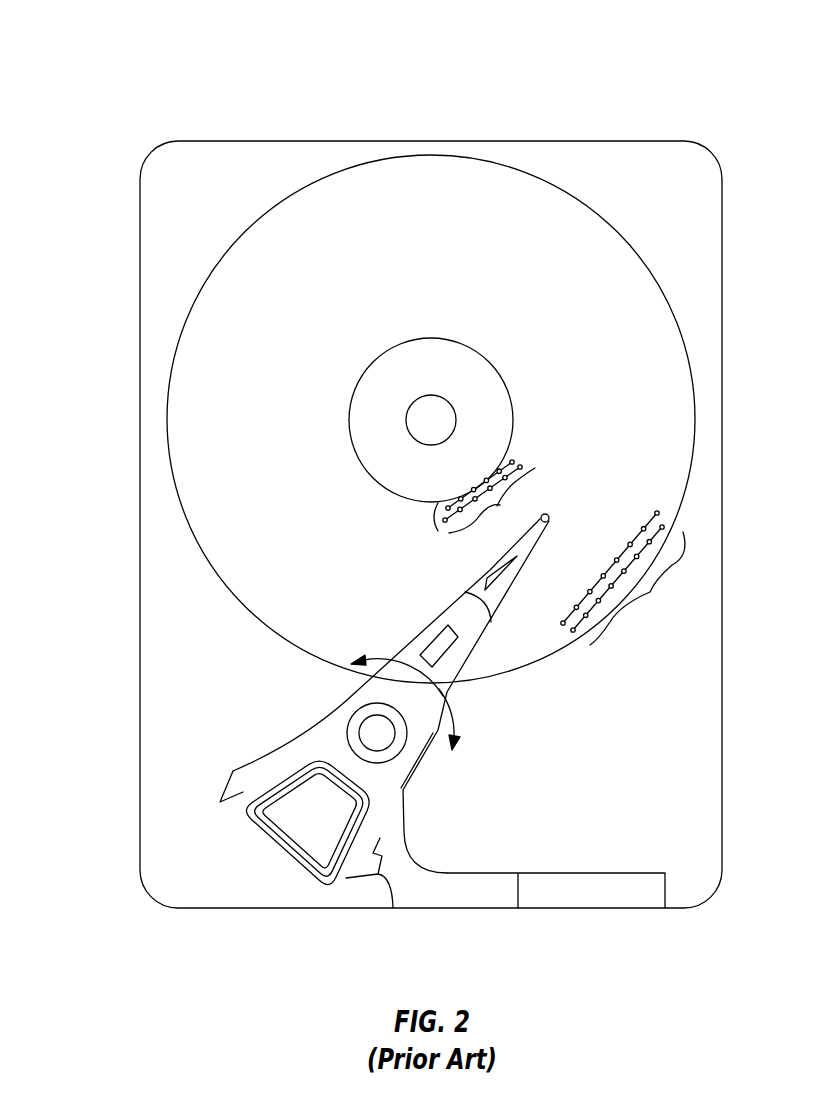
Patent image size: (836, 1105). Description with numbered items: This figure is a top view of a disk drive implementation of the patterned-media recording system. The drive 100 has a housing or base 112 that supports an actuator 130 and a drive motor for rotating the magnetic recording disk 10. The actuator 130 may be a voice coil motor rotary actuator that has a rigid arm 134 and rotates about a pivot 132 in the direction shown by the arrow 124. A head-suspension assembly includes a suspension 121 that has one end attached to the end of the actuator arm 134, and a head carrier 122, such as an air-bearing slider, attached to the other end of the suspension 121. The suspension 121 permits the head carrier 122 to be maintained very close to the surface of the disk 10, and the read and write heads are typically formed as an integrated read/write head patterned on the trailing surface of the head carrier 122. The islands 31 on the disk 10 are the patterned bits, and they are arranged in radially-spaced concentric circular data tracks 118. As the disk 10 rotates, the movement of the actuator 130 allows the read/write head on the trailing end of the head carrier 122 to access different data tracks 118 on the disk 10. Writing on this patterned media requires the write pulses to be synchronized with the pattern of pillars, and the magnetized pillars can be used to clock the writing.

The drive 100 is at (139, 60).
The housing or base 112 is at (649, 141).
The magnetic recording disk 10 is at (293, 196).
The data tracks 118 is at (432, 527).
The islands 31 is at (505, 504).
The suspension 121 is at (472, 587).
The head carrier 122 is at (549, 520).
The rigid arm 134 is at (416, 636).
The pivot 132 is at (368, 730).
The arrow 124 is at (453, 717).
The actuator 130 is at (230, 787).